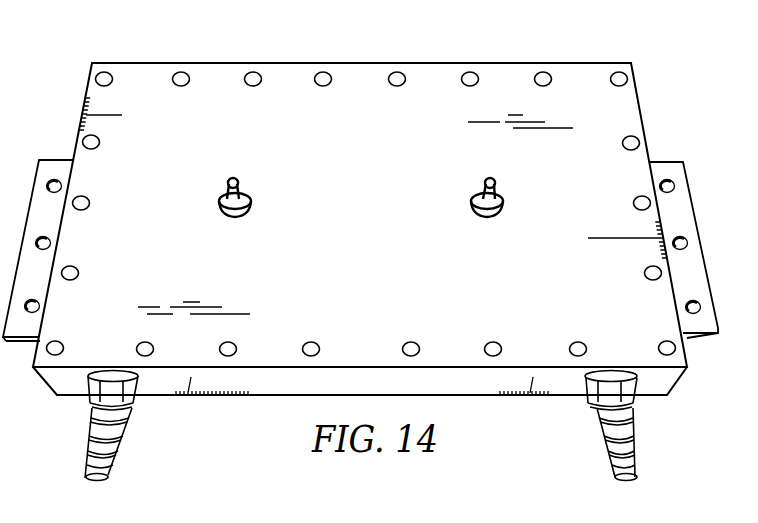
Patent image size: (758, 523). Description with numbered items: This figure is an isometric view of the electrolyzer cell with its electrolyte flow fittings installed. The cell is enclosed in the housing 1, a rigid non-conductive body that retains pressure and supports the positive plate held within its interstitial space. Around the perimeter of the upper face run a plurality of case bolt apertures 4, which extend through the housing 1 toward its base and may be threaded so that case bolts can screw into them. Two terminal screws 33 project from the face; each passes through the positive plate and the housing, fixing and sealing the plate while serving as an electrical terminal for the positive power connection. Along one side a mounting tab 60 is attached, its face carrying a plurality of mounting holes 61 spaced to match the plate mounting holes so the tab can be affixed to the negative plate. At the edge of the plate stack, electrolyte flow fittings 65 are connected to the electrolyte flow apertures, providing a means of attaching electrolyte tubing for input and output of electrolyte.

The housing 1 is at (572, 82).
The case bolt apertures 4 is at (107, 72).
The terminal screw 33 is at (243, 184).
The mounting tab 60 is at (665, 172).
The mounting holes 61 is at (675, 187).
The electrolyte flow fittings 65 is at (88, 430).